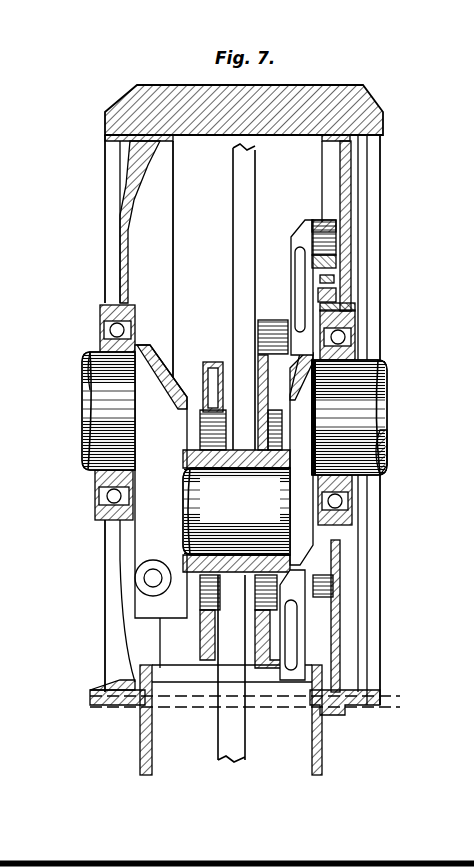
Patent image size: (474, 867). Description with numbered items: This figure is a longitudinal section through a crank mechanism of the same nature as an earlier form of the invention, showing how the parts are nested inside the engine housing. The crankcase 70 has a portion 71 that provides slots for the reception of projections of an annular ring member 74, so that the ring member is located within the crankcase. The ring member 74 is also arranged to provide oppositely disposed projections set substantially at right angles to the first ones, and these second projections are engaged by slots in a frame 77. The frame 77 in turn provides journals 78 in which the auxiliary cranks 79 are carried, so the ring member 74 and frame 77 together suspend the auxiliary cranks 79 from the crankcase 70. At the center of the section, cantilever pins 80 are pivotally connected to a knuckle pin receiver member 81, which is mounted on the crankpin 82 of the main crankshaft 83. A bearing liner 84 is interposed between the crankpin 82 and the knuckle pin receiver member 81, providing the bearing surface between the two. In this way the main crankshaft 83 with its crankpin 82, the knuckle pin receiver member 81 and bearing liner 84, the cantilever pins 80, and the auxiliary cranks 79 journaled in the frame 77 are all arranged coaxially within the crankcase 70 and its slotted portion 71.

The crankcase 70 is at (385, 130).
The portion of crankcase 71 is at (352, 300).
The annular ring member 74 is at (337, 278).
The frame 77 is at (335, 258).
The journals 78 is at (327, 232).
The auxiliary cranks 79 is at (297, 275).
The cantilever pins 80 is at (262, 340).
The knuckle pin receiver member 81 is at (245, 362).
The crankpin 82 is at (236, 511).
The main crankshaft 83 is at (90, 432).
The bearing liner 84 is at (222, 468).